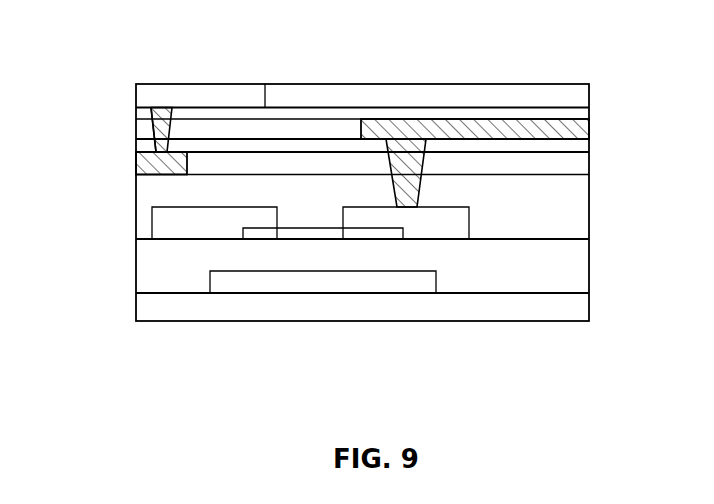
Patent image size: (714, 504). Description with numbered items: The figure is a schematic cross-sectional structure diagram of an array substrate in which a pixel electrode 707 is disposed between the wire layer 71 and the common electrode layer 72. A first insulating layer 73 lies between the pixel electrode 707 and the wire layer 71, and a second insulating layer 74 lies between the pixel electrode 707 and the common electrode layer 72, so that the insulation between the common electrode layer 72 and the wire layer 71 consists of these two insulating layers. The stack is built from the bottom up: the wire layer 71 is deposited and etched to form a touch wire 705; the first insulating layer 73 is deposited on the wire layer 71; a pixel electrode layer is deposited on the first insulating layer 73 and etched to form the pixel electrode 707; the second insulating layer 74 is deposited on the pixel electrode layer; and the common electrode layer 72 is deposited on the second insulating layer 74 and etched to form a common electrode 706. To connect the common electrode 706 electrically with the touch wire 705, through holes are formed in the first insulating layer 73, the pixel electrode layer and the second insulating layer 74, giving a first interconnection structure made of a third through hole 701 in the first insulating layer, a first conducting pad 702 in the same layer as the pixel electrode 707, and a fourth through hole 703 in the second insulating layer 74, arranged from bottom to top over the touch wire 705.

The wire layer 71 is at (566, 171).
The common electrode layer 72 is at (566, 96).
The first insulating layer 73 is at (566, 148).
The second insulating layer 74 is at (566, 116).
The third through hole 701 is at (155, 142).
The first conducting pad 702 is at (155, 132).
The fourth through hole 703 is at (163, 108).
The touch wire 705 is at (137, 160).
The common electrode 706 is at (290, 62).
The pixel electrode 707 is at (493, 120).